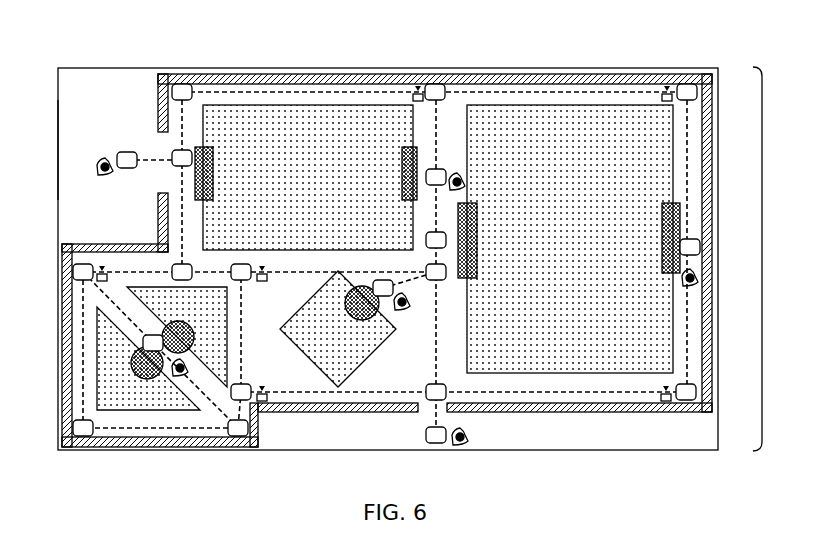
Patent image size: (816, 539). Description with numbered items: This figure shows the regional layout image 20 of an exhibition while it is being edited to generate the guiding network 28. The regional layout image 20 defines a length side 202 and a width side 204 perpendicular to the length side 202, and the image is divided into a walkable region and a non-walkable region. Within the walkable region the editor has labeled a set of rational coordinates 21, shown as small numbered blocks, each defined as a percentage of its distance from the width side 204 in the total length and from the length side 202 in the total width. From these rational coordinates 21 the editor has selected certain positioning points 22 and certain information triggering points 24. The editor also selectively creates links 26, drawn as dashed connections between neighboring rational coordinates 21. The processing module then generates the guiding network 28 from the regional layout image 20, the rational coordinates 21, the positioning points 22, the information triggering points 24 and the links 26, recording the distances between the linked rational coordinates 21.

The regional layout image 20 is at (95, 70).
The rational coordinates 21 is at (411, 270).
The positioning points 22 is at (384, 267).
The information triggering points 24 is at (423, 304).
The links 26 is at (571, 92).
The guiding network 28 is at (762, 262).
The length side 202 is at (243, 74).
The width side 204 is at (57, 130).